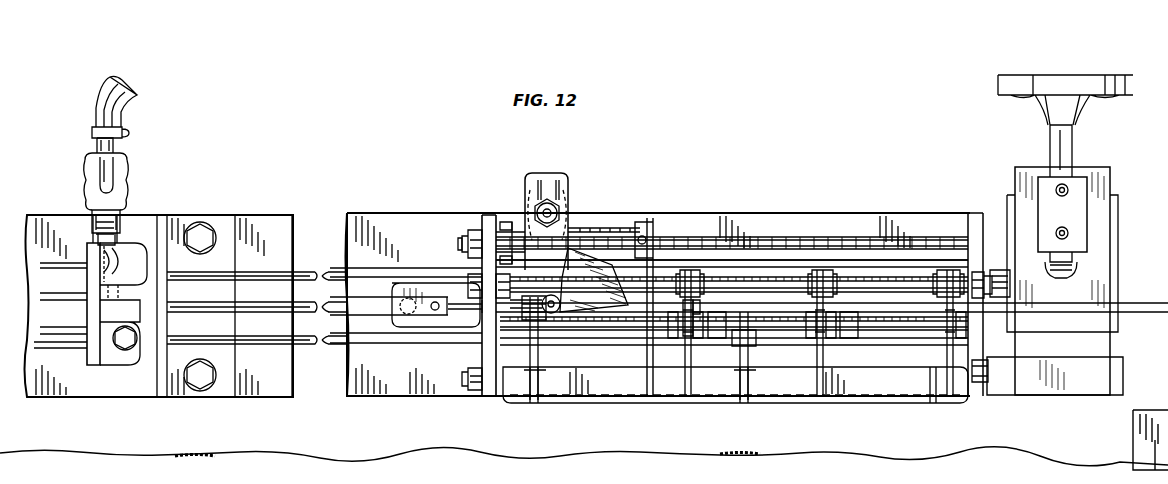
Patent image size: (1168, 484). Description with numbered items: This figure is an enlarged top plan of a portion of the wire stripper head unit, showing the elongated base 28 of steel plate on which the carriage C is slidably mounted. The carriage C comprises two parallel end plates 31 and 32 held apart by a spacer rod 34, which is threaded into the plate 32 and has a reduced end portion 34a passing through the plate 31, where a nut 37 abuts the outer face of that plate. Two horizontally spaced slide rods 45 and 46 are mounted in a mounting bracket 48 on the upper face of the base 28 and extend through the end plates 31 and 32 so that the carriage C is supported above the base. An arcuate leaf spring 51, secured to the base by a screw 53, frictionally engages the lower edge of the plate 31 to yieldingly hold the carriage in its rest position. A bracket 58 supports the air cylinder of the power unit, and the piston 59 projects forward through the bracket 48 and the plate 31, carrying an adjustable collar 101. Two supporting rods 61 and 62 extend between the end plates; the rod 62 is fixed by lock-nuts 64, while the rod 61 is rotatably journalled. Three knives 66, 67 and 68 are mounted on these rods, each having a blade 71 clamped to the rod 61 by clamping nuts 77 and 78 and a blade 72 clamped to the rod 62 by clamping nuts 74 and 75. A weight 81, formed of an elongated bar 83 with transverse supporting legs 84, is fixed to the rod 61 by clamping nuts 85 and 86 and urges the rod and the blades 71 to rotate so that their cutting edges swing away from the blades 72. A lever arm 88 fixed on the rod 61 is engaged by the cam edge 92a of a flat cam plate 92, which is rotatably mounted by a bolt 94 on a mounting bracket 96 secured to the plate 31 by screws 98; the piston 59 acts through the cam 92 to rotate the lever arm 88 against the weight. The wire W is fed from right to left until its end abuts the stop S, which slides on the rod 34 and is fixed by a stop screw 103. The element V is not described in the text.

The elongated base 28 is at (428, 380).
The end plate 31 is at (489, 215).
The end plate 32 is at (976, 213).
The spacer rod 34 is at (745, 238).
The reduced end portion 34a is at (460, 238).
The nut 37 is at (474, 230).
The slide rod 45 is at (297, 344).
The slide rod 46 is at (305, 272).
The mounting bracket 48 is at (162, 215).
The leaf spring 51 is at (410, 315).
The screw 53 is at (396, 316).
The bracket 58 is at (95, 365).
The piston 59 is at (262, 302).
The supporting rod 61 is at (794, 330).
The supporting rod 62 is at (792, 277).
The lock-nuts 64 is at (500, 284).
The knife 66 is at (688, 300).
The knife 67 is at (820, 270).
The knife 68 is at (950, 270).
The blade 71 is at (694, 338).
The blade 72 is at (700, 275).
The clamping nut 74 is at (688, 270).
The clamping nut 75 is at (696, 300).
The clamping nut 77 is at (672, 338).
The clamping nut 78 is at (720, 338).
The weight 81 is at (646, 388).
The elongated bar 83 is at (560, 385).
The supporting legs 84 is at (530, 385).
The clamping nut 85 is at (534, 330).
The clamping nut 86 is at (540, 335).
The lever arm 88 is at (590, 334).
The cam plate 92 is at (598, 232).
The cam edge 92a is at (618, 262).
The bolt 94 is at (549, 200).
The mounting bracket 96 is at (525, 232).
The screws 98 is at (512, 240).
The collar 101 is at (470, 310).
The stop screw 103 is at (650, 218).
The stop S is at (660, 219).
The carriage C is at (702, 145).
The valve block V is at (1100, 242).
The wire W is at (1158, 314).